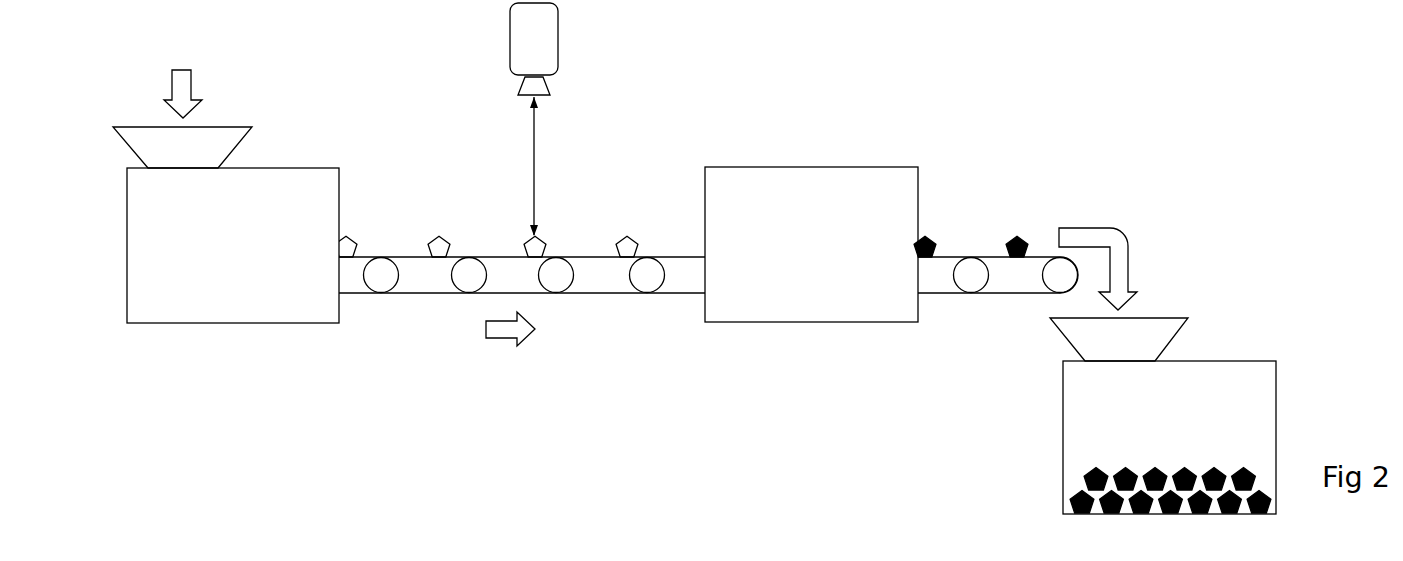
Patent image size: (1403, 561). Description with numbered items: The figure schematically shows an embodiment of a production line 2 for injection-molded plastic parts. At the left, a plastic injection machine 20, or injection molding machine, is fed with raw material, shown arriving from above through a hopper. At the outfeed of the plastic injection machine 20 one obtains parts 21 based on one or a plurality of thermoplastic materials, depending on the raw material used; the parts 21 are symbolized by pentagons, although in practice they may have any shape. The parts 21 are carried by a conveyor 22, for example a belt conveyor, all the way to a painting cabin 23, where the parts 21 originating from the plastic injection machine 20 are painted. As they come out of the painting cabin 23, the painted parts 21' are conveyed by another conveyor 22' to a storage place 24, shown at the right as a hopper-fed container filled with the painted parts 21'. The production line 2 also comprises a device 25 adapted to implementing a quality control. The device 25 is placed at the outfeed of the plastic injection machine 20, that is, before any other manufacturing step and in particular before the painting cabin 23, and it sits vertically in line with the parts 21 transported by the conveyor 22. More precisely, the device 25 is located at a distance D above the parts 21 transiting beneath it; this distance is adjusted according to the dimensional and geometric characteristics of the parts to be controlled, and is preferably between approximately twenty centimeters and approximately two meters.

The production line 2 is at (1135, 120).
The plastic injection machine 20 is at (205, 323).
The parts 21 is at (511, 215).
The painted parts 21' is at (991, 213).
The conveyor 22 is at (522, 312).
The conveyor 22' is at (998, 326).
The painting cabin 23 is at (820, 322).
The storage place 24 is at (1238, 361).
The device 25 is at (558, 33).